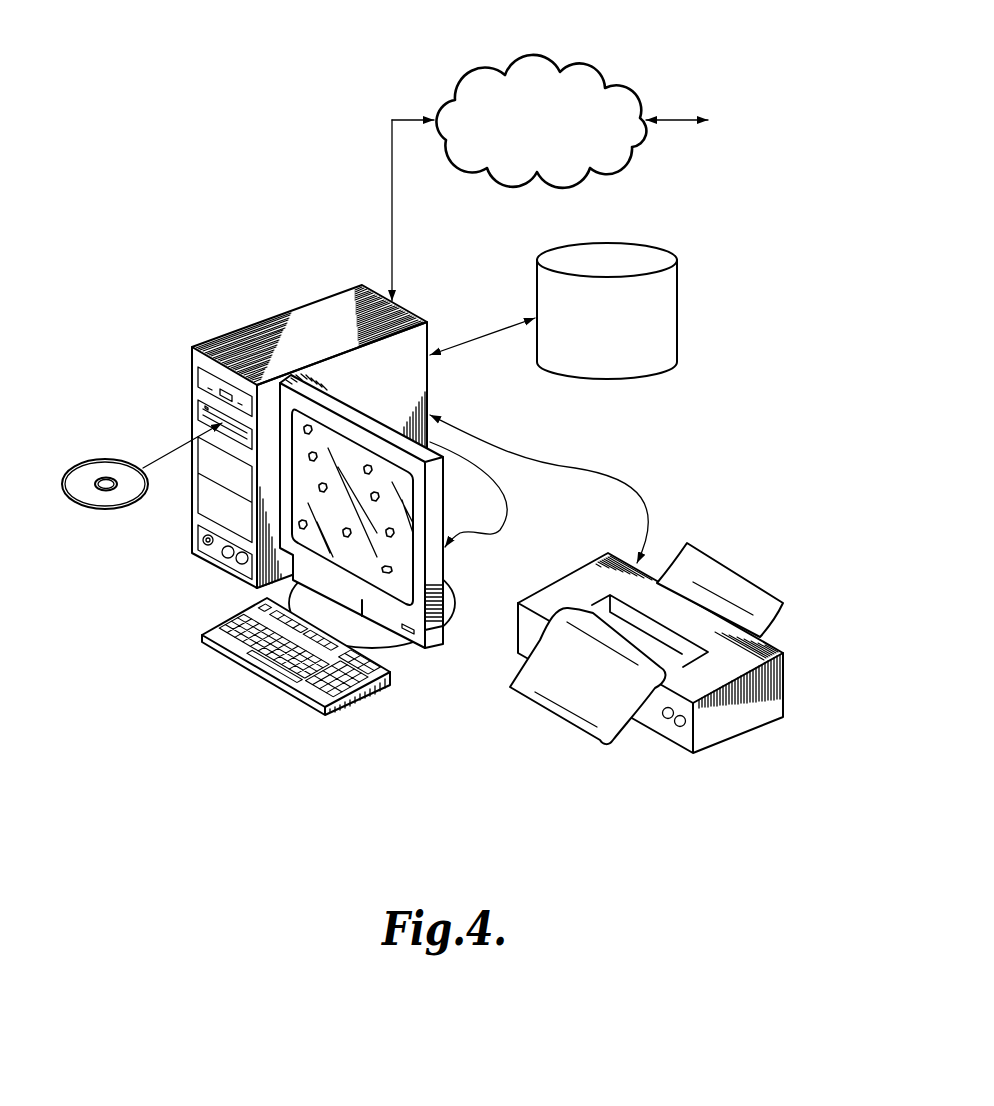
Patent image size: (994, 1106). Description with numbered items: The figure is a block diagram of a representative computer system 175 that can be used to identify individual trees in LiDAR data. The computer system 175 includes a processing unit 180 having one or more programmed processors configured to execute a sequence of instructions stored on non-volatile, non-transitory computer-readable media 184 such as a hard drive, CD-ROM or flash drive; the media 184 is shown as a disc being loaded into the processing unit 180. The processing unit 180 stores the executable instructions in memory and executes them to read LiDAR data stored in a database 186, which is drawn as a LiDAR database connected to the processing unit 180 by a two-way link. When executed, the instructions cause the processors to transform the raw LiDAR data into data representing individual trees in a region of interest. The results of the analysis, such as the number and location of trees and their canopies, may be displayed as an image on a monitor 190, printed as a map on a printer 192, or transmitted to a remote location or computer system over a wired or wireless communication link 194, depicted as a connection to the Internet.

The computer system 175 is at (254, 465).
The processing unit 180 is at (270, 323).
The computer-readable media 184 is at (95, 465).
The database 186 is at (677, 283).
The monitor 190 is at (413, 647).
The printer 192 is at (783, 650).
The communication link 194 is at (480, 78).